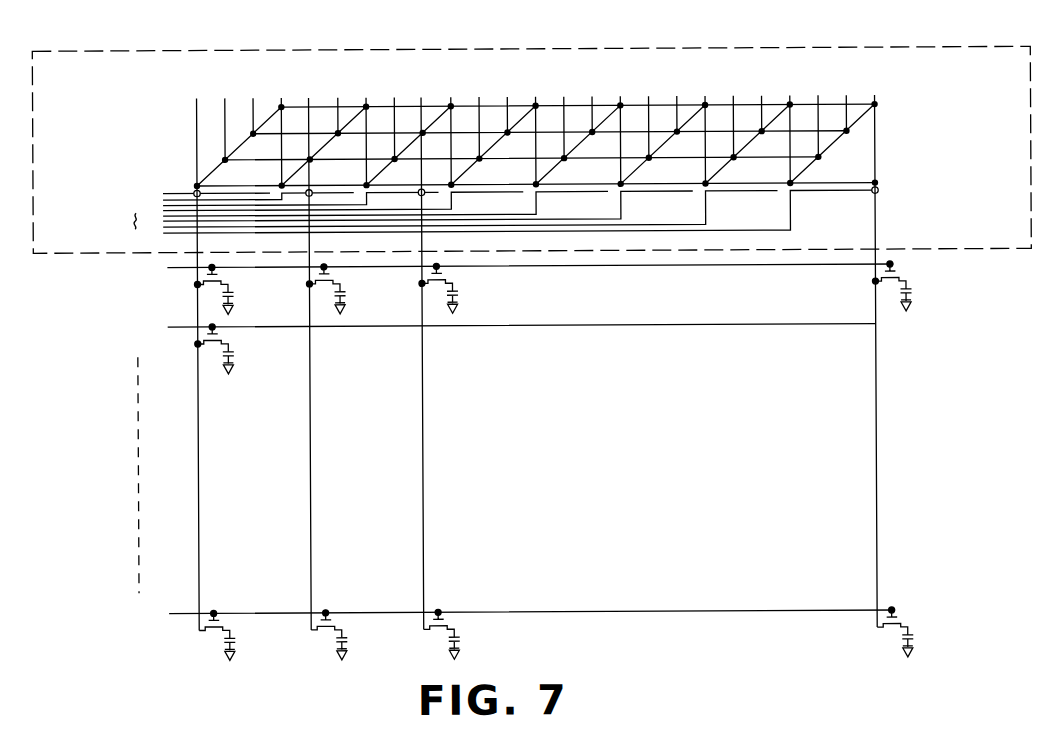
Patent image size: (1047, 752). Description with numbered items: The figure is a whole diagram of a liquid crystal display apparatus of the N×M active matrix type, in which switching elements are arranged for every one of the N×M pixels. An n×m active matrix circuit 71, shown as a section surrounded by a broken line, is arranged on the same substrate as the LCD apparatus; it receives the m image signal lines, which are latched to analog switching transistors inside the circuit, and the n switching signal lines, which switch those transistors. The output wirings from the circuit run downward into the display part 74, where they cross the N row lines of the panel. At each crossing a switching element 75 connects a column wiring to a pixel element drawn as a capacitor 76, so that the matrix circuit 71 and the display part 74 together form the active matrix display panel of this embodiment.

The n×m active matrix circuit 71 is at (507, 51).
The display part 74 is at (575, 442).
The thin film transistor 75 is at (222, 334).
The capacitor 76 is at (235, 357).